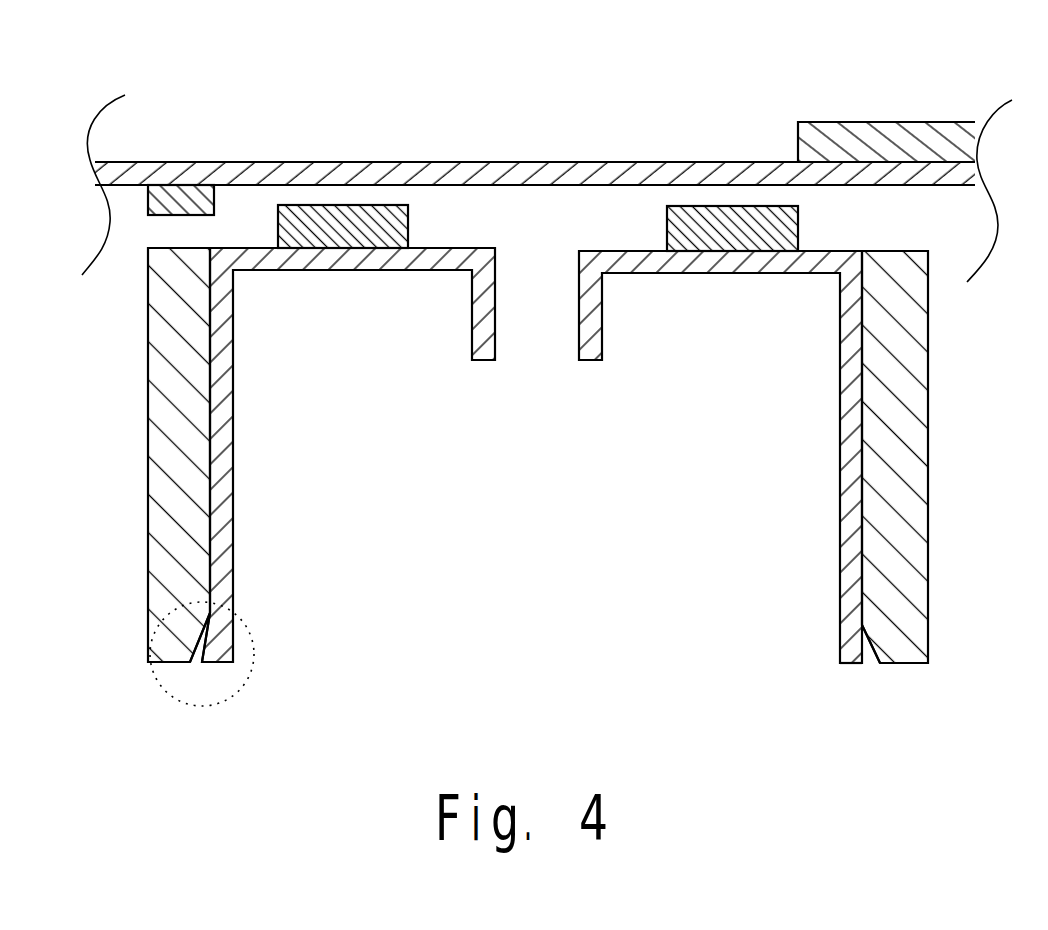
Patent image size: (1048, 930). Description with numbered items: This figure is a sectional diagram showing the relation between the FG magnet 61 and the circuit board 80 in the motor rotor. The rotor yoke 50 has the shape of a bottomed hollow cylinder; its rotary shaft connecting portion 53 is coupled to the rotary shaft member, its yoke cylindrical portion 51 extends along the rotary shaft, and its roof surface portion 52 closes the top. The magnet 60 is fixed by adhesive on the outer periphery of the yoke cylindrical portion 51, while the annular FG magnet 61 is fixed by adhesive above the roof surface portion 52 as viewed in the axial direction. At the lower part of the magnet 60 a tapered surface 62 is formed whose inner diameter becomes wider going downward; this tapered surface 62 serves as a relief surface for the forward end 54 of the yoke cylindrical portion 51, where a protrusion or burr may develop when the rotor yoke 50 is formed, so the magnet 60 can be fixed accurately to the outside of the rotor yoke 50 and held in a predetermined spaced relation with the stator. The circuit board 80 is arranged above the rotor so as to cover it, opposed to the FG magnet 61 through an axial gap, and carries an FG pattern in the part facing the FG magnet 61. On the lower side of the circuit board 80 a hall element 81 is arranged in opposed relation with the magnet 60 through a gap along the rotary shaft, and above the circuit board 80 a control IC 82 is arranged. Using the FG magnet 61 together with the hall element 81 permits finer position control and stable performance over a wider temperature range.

The rotor yoke 50 is at (320, 305).
The yoke cylindrical portion 51 is at (838, 413).
The roof surface portion 52 is at (747, 265).
The rotary shaft connecting portion 53 is at (848, 657).
The forward end 54 is at (232, 697).
The magnet 60 is at (925, 540).
The FG magnet 61 is at (337, 214).
The tapered surface 62 is at (873, 648).
The circuit board 80 is at (540, 140).
The hall element 81 is at (185, 186).
The control IC 82 is at (895, 128).